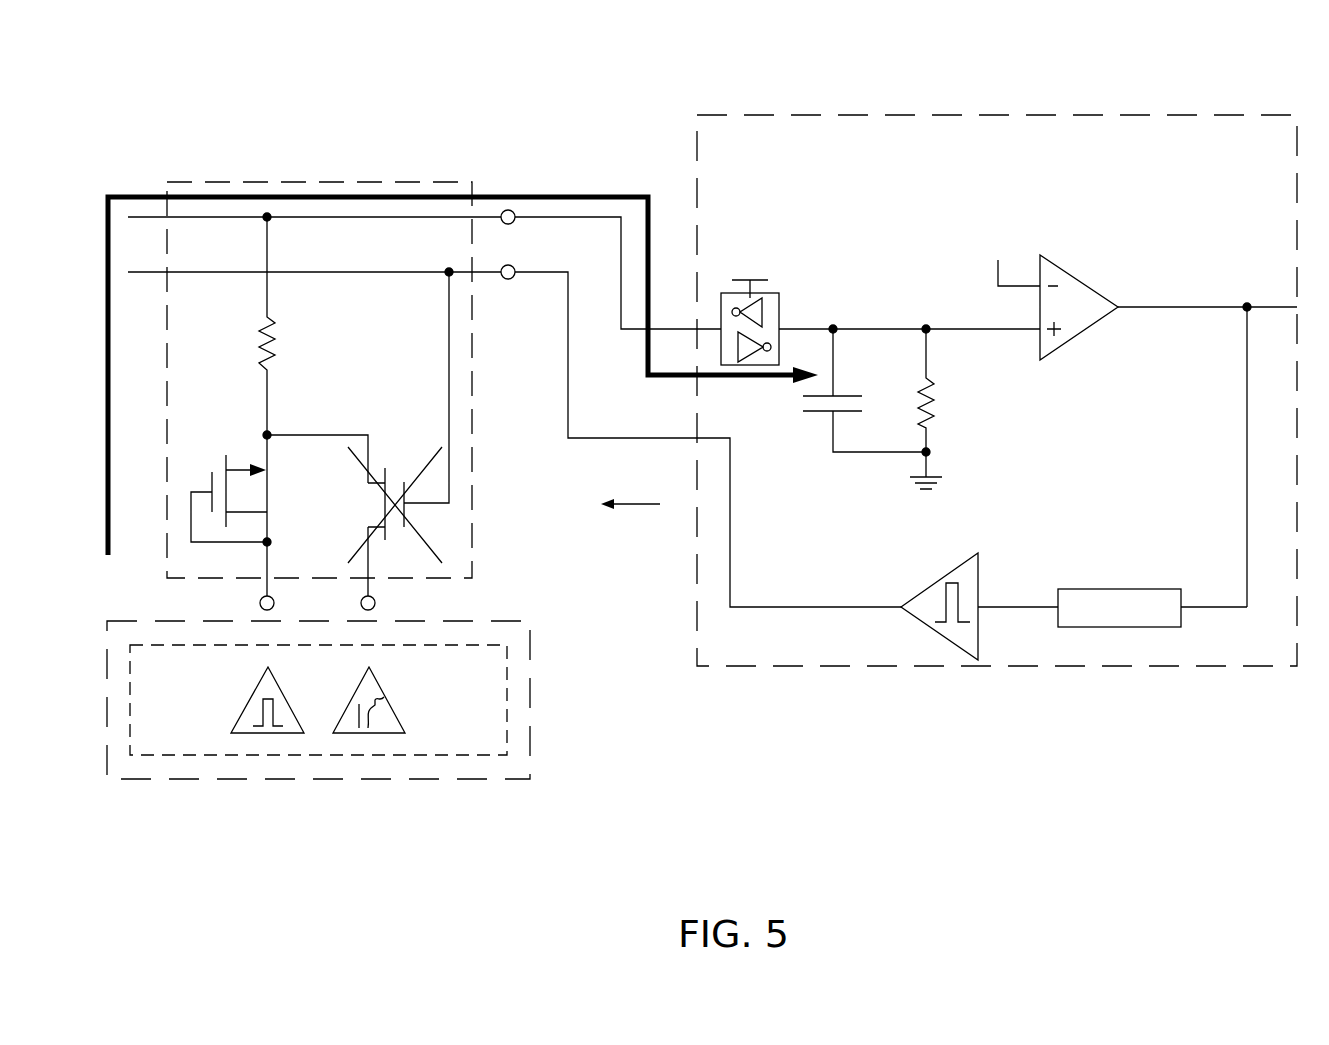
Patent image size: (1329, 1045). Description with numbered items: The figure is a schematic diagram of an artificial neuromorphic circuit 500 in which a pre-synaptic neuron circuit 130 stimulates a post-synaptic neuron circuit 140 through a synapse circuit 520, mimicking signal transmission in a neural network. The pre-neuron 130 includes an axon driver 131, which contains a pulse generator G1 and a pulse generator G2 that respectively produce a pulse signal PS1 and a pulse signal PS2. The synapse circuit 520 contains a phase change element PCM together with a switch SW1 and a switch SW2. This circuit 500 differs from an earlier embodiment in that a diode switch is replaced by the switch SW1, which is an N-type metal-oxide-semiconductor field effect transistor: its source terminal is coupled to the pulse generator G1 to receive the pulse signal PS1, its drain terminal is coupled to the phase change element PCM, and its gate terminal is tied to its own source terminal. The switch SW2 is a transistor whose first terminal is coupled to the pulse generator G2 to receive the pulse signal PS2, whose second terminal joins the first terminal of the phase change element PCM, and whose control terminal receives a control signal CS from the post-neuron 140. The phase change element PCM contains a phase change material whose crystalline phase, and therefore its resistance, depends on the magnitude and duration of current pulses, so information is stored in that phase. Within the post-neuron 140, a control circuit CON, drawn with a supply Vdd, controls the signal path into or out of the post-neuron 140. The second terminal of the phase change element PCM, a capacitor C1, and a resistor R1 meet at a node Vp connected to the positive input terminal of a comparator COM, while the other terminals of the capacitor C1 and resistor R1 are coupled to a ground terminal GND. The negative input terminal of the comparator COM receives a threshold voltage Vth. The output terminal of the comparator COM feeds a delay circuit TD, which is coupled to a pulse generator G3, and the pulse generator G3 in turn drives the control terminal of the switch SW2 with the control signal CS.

The artificial neuromorphic circuit 500 is at (147, 116).
The synapse circuit 520 is at (345, 182).
The post-synaptic neuron circuit 140 is at (1068, 115).
The pre-synaptic neuron circuit 130 is at (530, 645).
The axon driver 131 is at (507, 700).
The phase change element PCM is at (231, 326).
The switch SW1 is at (205, 476).
The switch SW2 is at (382, 441).
The control circuit CON is at (782, 302).
The supply voltage Vdd is at (746, 273).
The node voltage Vp is at (909, 311).
The threshold voltage Vth is at (1011, 258).
The comparator COM is at (1080, 317).
The capacitor C1 is at (864, 390).
The resistor R1 is at (948, 390).
The ground terminal GND is at (924, 484).
The control signal CS is at (633, 506).
The pulse generator G3 is at (915, 597).
The delay circuit TD is at (1117, 589).
The pulse generator G1 is at (252, 694).
The pulse generator G2 is at (384, 693).
The pulse signal PS1 is at (248, 711).
The pulse signal PS2 is at (368, 722).